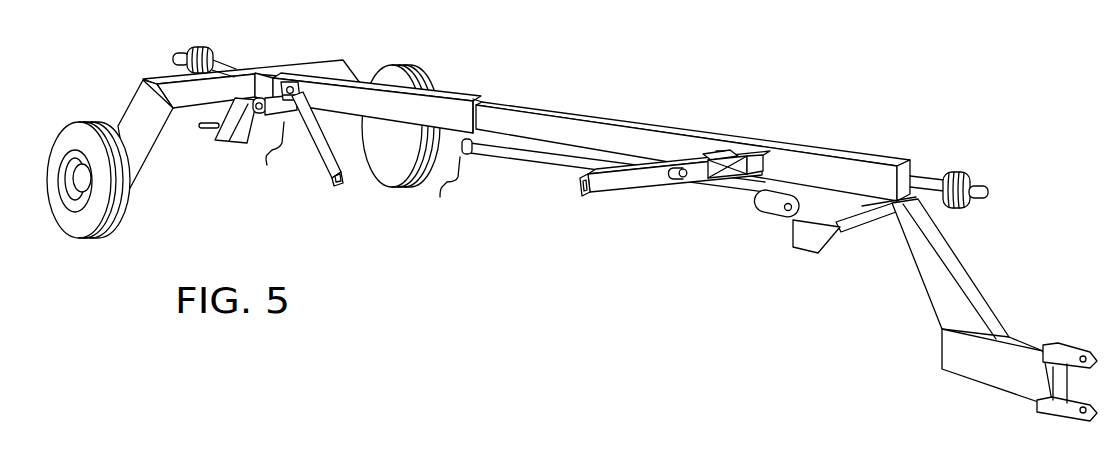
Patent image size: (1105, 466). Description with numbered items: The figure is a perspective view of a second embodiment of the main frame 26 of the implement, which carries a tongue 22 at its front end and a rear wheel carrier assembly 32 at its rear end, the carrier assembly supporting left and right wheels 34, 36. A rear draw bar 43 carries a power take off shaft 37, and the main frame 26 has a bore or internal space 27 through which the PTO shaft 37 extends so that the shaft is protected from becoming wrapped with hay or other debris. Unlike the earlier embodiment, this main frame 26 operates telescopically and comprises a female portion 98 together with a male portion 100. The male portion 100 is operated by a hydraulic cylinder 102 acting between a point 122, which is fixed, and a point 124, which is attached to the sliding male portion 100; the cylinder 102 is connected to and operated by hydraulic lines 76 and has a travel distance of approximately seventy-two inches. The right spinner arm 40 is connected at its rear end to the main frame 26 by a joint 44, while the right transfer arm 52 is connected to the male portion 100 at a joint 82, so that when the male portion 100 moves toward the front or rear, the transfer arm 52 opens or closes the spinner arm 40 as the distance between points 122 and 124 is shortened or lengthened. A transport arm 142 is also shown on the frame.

The tongue 22 is at (1027, 348).
The main frame 26 is at (443, 95).
The bore or internal space 27 is at (916, 172).
The rear wheel carrier assembly 32 is at (137, 77).
The wheel 34 is at (389, 67).
The wheel 36 is at (126, 207).
The power take off shaft 37 is at (186, 52).
The right spinner arm 40 is at (337, 187).
The rear draw bar 43 is at (200, 127).
The joint 44 is at (289, 82).
The right transfer arm 52 is at (628, 180).
The hydraulic lines 76 is at (285, 147).
The joint 82 is at (714, 152).
The female portion 98 is at (470, 99).
The male portion 100 is at (552, 114).
The hydraulic cylinder 102 is at (467, 162).
The fixed point 122 is at (257, 116).
The point attached to sliding male portion 124 is at (775, 213).
The transport arm 142 is at (808, 258).